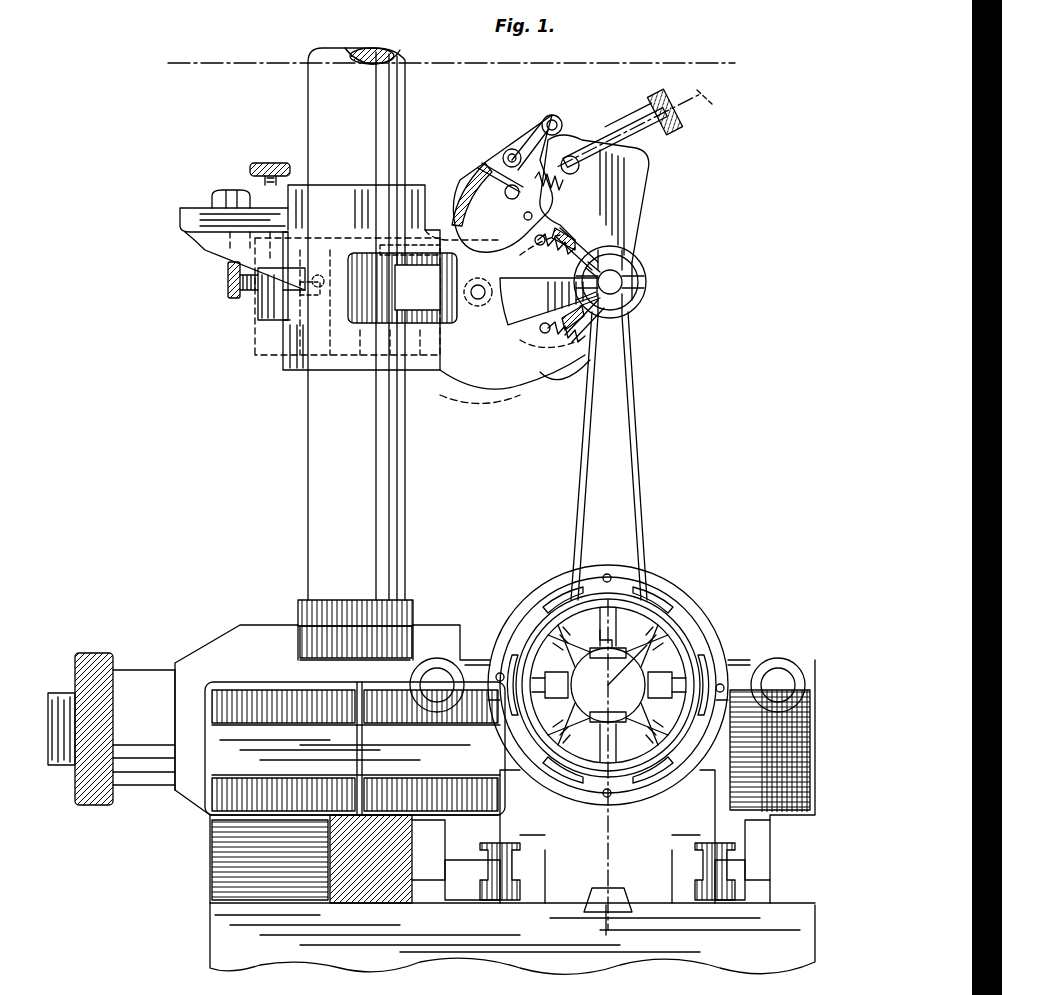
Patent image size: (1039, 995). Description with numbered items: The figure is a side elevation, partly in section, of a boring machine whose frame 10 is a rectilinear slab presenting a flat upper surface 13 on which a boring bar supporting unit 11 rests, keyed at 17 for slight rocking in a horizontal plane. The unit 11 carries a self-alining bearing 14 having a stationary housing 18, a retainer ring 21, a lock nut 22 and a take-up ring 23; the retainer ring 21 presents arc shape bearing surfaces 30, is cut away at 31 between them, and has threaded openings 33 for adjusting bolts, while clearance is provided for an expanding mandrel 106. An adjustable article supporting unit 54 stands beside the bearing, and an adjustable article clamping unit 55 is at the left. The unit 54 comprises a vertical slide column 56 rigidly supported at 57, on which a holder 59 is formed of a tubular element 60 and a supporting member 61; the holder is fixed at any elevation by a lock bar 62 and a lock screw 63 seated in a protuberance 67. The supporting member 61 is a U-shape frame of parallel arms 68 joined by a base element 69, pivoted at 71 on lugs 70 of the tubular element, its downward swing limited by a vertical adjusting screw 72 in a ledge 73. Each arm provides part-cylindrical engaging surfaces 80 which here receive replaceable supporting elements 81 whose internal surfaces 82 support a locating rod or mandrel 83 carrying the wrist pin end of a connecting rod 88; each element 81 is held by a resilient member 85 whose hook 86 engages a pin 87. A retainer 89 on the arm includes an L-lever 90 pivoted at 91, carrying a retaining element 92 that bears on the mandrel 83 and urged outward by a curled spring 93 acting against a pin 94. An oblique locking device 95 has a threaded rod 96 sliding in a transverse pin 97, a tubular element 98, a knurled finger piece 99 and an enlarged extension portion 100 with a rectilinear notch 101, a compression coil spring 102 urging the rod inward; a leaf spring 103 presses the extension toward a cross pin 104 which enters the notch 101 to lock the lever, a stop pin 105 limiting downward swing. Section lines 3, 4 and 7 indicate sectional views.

The section line 3- 3 is at (157, 64).
The section line 4- 4 is at (714, 572).
The section line 7- 7 is at (697, 93).
The frame 10 is at (215, 930).
The boring bar supporting unit 11 is at (652, 830).
The flat upper surface 13 is at (408, 903).
The self-alining bearing 14 is at (503, 625).
The key 17 is at (592, 893).
The stationary housing 18 is at (541, 585).
The retainer ring 21 is at (548, 778).
The lock nut 22 is at (712, 632).
The take-up ring 23 is at (588, 770).
The arc shape bearing surface 30 is at (636, 592).
The cut away 31 is at (532, 615).
The interiorly threaded opening 33 is at (608, 572).
The adjustable article supporting unit 54 is at (490, 402).
The adjustable article clamping unit 55 is at (145, 683).
The vertical slide column 56 is at (398, 527).
The rigid support 57 is at (410, 640).
The holder 59 is at (268, 347).
The tubular element 60 is at (292, 368).
The supporting member 61 is at (458, 374).
The lock bar 62 is at (268, 318).
The lock screw 63 is at (218, 281).
The protuberance 67 is at (260, 298).
The arm 68 is at (512, 375).
The base element 69 is at (190, 218).
The lug 70 is at (440, 318).
The pivot 71 is at (480, 298).
The vertical adjusting screw 72 is at (265, 170).
The ledge 73 is at (256, 187).
The part-cylindrical engaging surface 80 is at (590, 236).
The replaceable supporting element 81 is at (598, 258).
The internal part-cylindrical engaging surface 82 is at (640, 293).
The locating rod or mandrel 83 is at (618, 283).
The resilient member 85 is at (590, 284).
The hook 86 is at (548, 228).
The pin 87 is at (540, 252).
The connecting rod 88 is at (632, 490).
The locating rod or mandrel retainer 89 is at (660, 196).
The L-lever 90 is at (645, 170).
The pivotal mounting 91 is at (556, 114).
The retaining element 92 is at (632, 262).
The curled spring 93 is at (530, 130).
The pin 94 is at (506, 150).
The oblique locking device 95 is at (625, 124).
The threaded rod 96 is at (680, 118).
The transverse pin 97 is at (580, 166).
The tubular element 98 is at (636, 138).
The knurled finger piece 99 is at (670, 98).
The enlarged extension portion 100 is at (496, 194).
The rectilinear notch 101 is at (485, 167).
The compression coil spring 102 is at (548, 182).
The leaf spring 103 is at (500, 235).
The cross pin 104 is at (470, 180).
The stop pin 105 is at (528, 222).
The expanding mandrel 106 is at (614, 630).